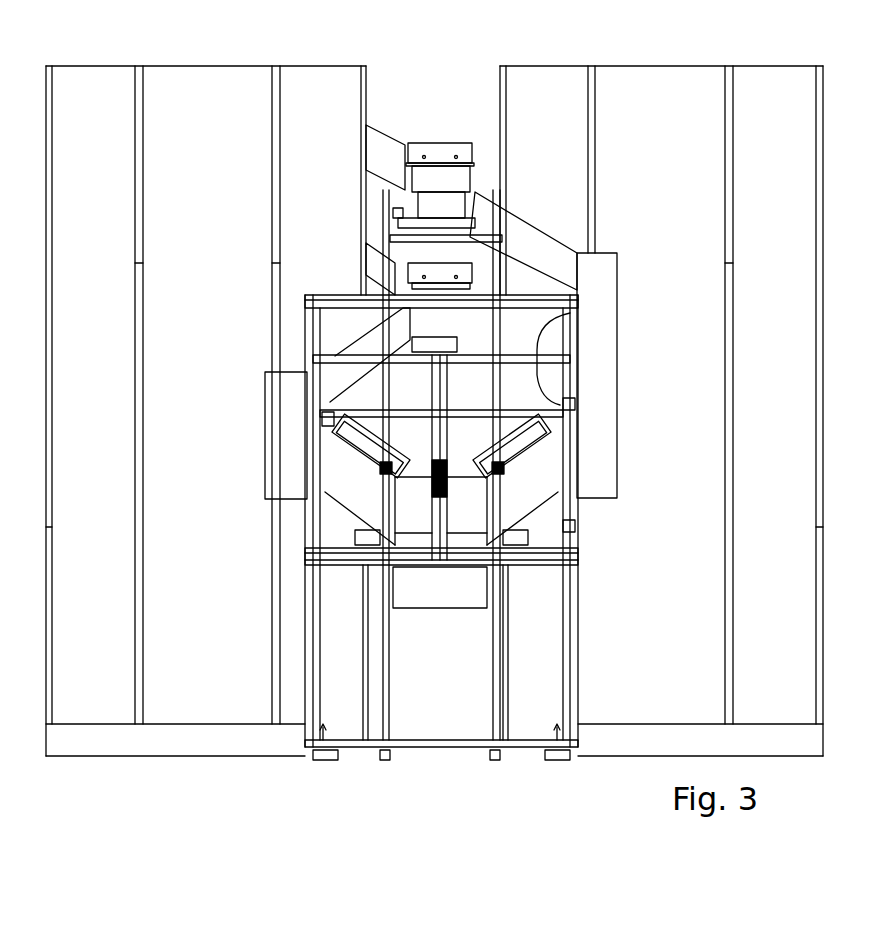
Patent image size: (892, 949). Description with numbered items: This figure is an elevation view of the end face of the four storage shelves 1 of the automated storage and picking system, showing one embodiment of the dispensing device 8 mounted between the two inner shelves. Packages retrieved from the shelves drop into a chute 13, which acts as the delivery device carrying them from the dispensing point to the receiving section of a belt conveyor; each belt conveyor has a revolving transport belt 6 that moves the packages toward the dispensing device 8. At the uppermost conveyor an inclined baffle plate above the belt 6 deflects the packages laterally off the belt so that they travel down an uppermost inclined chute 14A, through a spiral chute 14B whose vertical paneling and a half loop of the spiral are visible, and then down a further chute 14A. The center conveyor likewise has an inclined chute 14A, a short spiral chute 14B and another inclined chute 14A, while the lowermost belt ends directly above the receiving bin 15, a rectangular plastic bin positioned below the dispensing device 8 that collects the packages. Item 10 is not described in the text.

The storage shelf 1 is at (88, 74).
The transport belt 6 is at (450, 215).
The dispensing device 8 is at (247, 432).
The container 10 is at (416, 143).
The chute 13 is at (377, 135).
The chute 14A is at (600, 212).
The spiral chute 14B is at (605, 290).
The receiving bin 15 is at (420, 600).